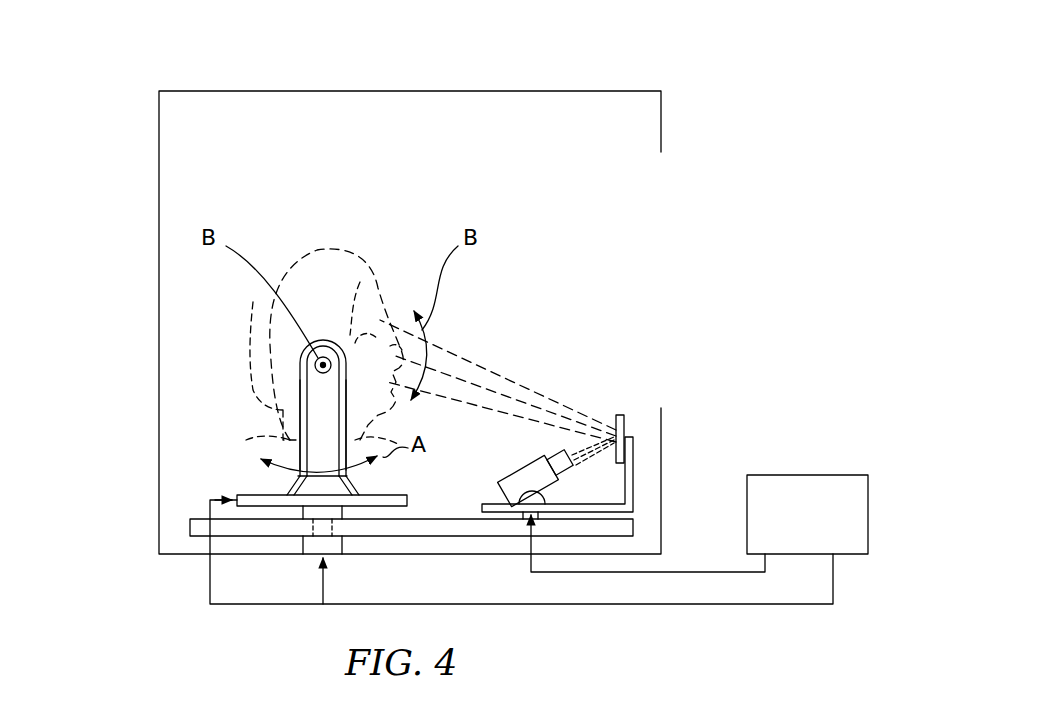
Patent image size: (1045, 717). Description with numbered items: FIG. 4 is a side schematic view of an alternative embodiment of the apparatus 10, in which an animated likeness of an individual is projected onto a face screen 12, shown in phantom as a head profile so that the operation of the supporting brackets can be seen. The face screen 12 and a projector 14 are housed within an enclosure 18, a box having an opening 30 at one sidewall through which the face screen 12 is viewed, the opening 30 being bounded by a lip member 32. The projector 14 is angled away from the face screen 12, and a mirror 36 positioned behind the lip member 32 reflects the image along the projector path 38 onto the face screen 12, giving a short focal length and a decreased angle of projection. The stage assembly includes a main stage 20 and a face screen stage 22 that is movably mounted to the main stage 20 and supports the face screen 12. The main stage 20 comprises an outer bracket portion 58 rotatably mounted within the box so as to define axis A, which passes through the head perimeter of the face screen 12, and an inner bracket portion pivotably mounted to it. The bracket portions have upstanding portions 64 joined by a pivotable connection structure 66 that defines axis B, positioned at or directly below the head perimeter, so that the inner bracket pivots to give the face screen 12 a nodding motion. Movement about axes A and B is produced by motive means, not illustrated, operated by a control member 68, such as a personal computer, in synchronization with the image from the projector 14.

The apparatus 10 is at (697, 90).
The face screen 12 is at (333, 245).
The projector 14 is at (528, 458).
The enclosure 18 is at (122, 281).
The main stage 20 is at (465, 537).
The face screen stage 22 is at (258, 492).
The opening 30 is at (676, 259).
The lip member 32 is at (662, 450).
The mirror 36 is at (618, 415).
The projector path 38 is at (470, 360).
The outer bracket portion 58 is at (300, 422).
The upstanding portions 64 is at (370, 358).
The pivotable connection structure 66 is at (324, 356).
The control member 68 is at (810, 475).